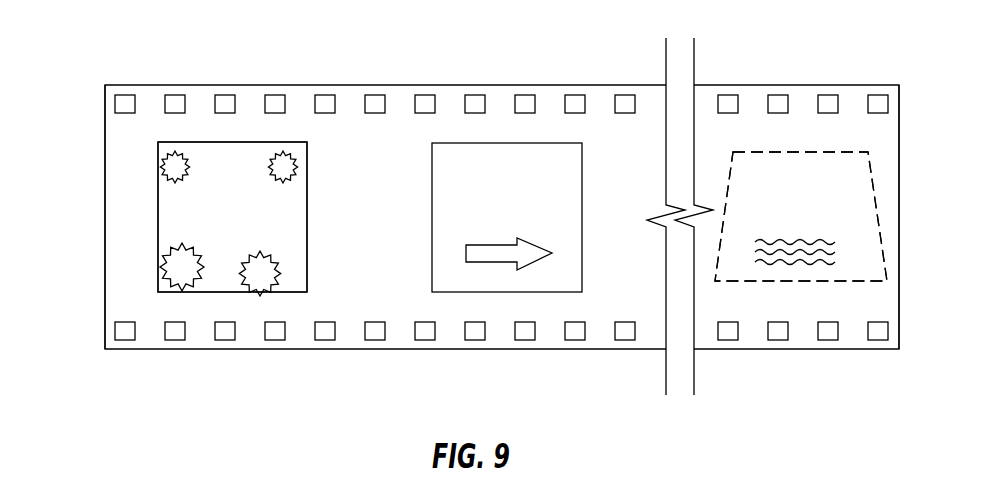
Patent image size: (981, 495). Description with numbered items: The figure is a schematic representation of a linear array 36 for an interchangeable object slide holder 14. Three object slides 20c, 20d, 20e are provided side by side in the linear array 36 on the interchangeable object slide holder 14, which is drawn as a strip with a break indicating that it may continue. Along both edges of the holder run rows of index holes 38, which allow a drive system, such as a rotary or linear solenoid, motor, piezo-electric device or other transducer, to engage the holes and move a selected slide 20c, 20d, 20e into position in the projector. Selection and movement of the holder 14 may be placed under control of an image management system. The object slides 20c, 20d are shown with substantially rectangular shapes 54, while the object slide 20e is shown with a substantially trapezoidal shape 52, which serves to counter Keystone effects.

The interchangeable object slide holder 14 is at (110, 52).
The linear array 36 is at (147, 230).
The index holes 38 is at (426, 94).
The substantially rectangular shape 54 is at (238, 142).
The substantially trapezoidal shape 52 is at (803, 151).
The object slide 20c is at (251, 243).
The object slide 20d is at (526, 226).
The object slide 20e is at (819, 226).